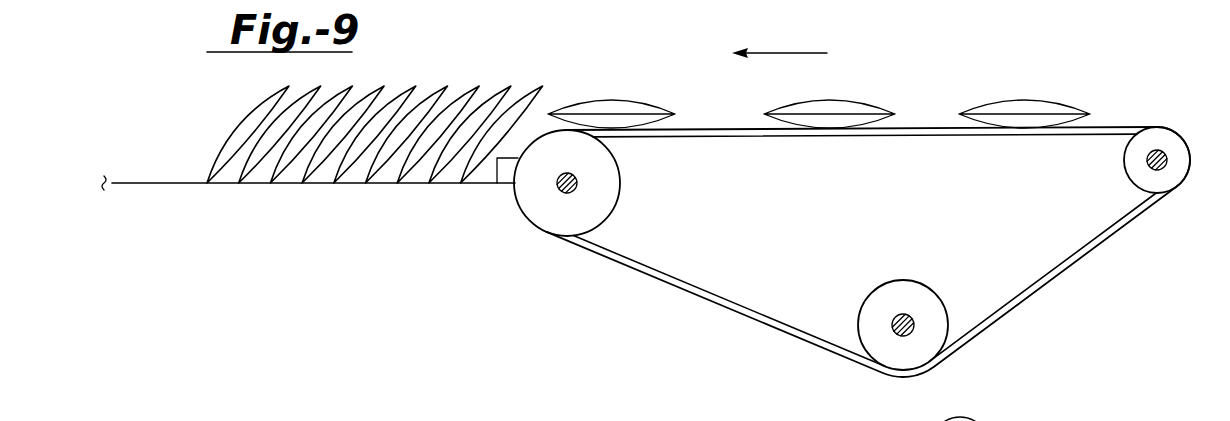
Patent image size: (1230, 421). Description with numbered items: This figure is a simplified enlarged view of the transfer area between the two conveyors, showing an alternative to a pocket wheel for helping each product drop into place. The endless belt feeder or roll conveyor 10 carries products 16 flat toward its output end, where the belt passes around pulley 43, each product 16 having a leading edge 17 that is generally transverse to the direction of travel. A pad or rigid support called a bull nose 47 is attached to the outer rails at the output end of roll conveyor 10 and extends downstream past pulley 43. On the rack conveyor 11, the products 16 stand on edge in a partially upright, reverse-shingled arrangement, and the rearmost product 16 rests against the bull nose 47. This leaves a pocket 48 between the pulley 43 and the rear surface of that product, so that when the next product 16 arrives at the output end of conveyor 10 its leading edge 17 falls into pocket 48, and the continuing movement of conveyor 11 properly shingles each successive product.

The endless belt feeder conveyor 10 is at (852, 195).
The rack conveyor 11 is at (648, 158).
The product 16 is at (648, 103).
The leading edge 17 is at (762, 115).
The pulley 43 is at (606, 222).
The bull nose 47 is at (493, 184).
The pocket 48 is at (538, 118).